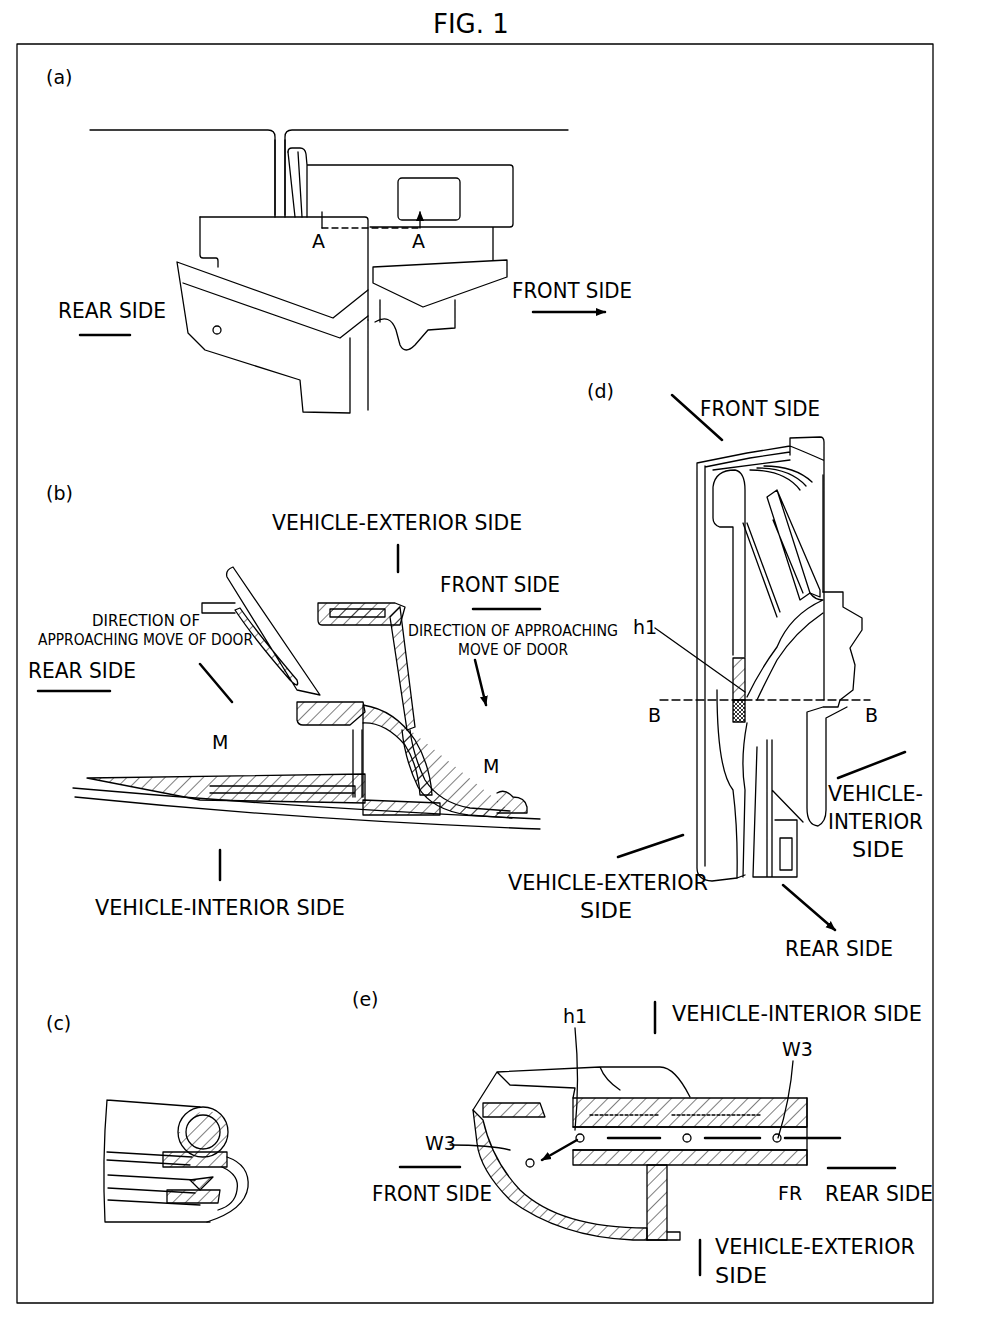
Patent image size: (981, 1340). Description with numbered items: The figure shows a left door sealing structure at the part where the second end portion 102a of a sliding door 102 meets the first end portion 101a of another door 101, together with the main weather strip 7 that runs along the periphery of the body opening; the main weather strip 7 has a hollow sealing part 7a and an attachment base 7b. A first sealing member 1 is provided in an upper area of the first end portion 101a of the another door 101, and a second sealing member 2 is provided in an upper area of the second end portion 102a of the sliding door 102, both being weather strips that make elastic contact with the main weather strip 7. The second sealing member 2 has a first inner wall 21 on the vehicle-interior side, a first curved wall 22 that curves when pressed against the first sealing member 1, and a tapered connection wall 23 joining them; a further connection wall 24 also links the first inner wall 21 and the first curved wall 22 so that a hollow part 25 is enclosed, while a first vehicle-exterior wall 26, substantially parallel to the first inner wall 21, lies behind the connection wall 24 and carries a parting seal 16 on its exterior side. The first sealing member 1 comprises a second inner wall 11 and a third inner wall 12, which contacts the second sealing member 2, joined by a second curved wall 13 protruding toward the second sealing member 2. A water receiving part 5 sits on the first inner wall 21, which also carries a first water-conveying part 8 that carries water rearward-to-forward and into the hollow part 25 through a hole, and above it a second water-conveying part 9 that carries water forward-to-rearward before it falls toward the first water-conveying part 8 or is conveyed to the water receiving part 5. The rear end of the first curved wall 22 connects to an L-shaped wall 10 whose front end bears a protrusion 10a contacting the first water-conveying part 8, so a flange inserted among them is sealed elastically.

The first sealing member 1 is at (508, 192).
The second sealing member 2 is at (232, 217).
The water receiving part 5 is at (243, 300).
The main weather strip 7 is at (130, 800).
The hollow sealing part 7a is at (225, 1122).
The attachment base 7b is at (247, 1180).
The first water-conveying part 8 is at (780, 677).
The second water-conveying part 9 is at (798, 532).
The L-shaped wall 10 is at (735, 720).
The protrusion 10a is at (730, 675).
The second inner wall 11 is at (490, 243).
The third inner wall 12 is at (405, 665).
The second curved wall 13 is at (316, 192).
The parting seal 16 is at (240, 590).
The first inner wall 21 is at (210, 243).
The first curved wall 22 is at (420, 808).
The connection wall 23 is at (360, 258).
The connection wall 24 is at (350, 762).
The hollow part 25 is at (377, 740).
The first vehicle-exterior wall 26 is at (330, 705).
The another door 101 is at (490, 130).
The first end portion 101a is at (289, 135).
The sliding door 102 is at (118, 130).
The second end portion 102a is at (275, 130).